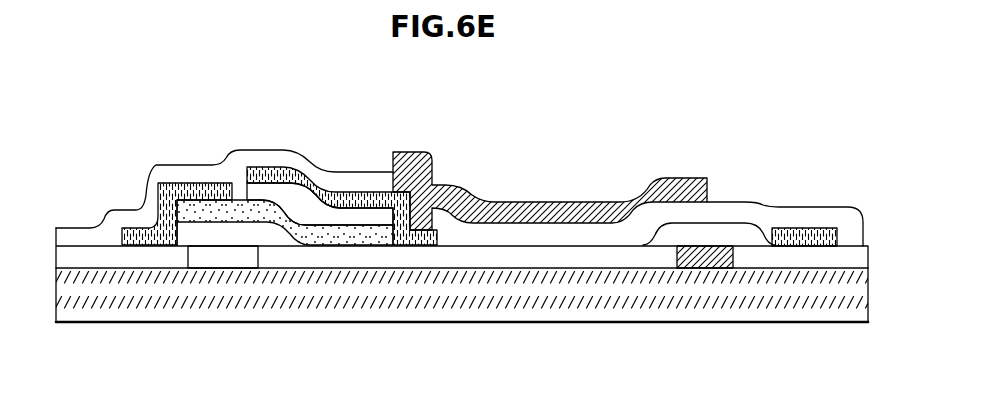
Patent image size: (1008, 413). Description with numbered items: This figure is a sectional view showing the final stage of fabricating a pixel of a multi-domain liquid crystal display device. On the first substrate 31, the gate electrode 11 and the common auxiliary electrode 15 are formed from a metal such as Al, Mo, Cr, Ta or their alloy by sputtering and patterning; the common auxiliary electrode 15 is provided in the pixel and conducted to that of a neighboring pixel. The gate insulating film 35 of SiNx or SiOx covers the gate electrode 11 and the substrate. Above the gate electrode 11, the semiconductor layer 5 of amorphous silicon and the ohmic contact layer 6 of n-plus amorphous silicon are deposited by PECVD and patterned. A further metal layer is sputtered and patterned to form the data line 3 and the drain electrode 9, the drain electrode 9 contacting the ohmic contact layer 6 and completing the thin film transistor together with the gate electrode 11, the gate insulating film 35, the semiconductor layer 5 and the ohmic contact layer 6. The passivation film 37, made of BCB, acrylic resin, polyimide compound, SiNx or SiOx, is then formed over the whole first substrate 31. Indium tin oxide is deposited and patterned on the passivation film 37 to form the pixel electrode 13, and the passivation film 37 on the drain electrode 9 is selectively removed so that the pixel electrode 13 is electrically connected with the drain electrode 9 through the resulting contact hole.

The data line 3 is at (190, 183).
The semiconductor layer 5 is at (313, 236).
The ohmic contact layer 6 is at (365, 212).
The drain electrode 9 is at (353, 196).
The gate electrode 11 is at (225, 262).
The pixel electrode 13 is at (590, 202).
The common auxiliary electrode 15 is at (703, 262).
The first substrate 31 is at (590, 283).
The gate insulating film 35 is at (465, 255).
The passivation film 37 is at (520, 237).